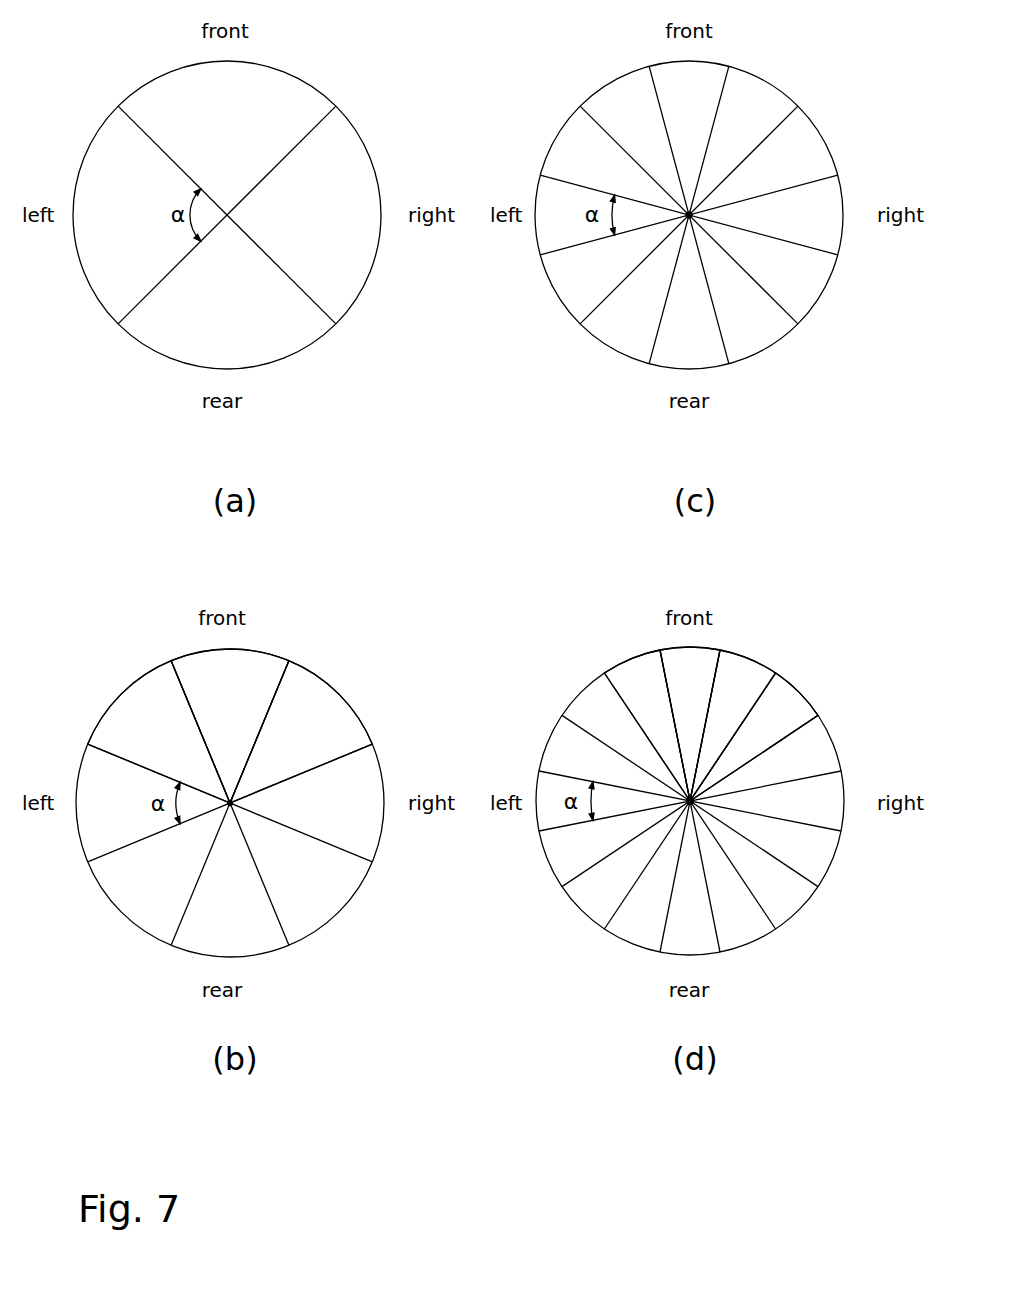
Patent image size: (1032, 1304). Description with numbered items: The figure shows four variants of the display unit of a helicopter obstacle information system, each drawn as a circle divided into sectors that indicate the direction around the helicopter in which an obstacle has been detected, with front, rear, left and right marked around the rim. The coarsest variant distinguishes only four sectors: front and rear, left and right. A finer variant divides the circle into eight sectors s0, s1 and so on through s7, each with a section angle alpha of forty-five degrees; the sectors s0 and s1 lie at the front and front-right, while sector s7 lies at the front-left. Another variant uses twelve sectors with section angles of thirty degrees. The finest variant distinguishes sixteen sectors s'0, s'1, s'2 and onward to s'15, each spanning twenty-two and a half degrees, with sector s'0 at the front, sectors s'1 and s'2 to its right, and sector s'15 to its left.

The sector s0 is at (253, 702).
The sector s1 is at (320, 721).
The sector s7 is at (142, 712).
The sector s'0 is at (736, 689).
The sector s'1 is at (780, 703).
The sector s'2 is at (798, 721).
The sector s'15 is at (595, 701).